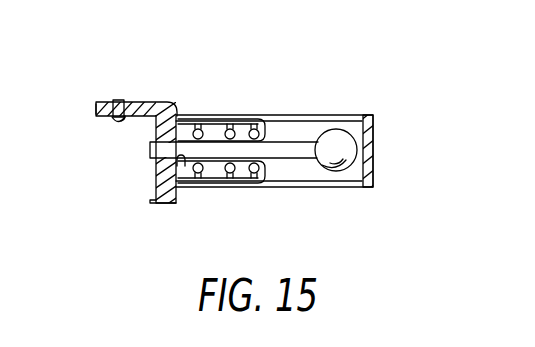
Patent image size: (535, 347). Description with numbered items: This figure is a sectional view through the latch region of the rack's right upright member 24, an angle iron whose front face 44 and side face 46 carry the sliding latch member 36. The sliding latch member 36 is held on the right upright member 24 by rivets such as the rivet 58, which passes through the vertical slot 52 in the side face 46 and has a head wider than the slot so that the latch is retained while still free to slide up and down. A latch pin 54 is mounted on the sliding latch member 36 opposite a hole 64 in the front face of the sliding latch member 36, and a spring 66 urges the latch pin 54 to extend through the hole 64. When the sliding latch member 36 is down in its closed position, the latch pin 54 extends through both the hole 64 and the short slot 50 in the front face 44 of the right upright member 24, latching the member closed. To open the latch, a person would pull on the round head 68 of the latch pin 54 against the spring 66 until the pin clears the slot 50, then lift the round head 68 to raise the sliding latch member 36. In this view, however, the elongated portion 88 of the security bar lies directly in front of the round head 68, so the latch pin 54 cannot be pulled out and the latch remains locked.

The right upright member 24 is at (96, 113).
The sliding latch member 36 is at (157, 102).
The front face 44 is at (150, 203).
The side face 46 is at (114, 122).
The short slot 50 is at (153, 157).
The vertical slot 52 is at (112, 102).
The latch pin 54 is at (300, 117).
The rivet 58 is at (123, 120).
The hole 64 is at (183, 168).
The spring 66 is at (237, 118).
The round head 68 is at (345, 130).
The elongated portion 88 is at (375, 146).